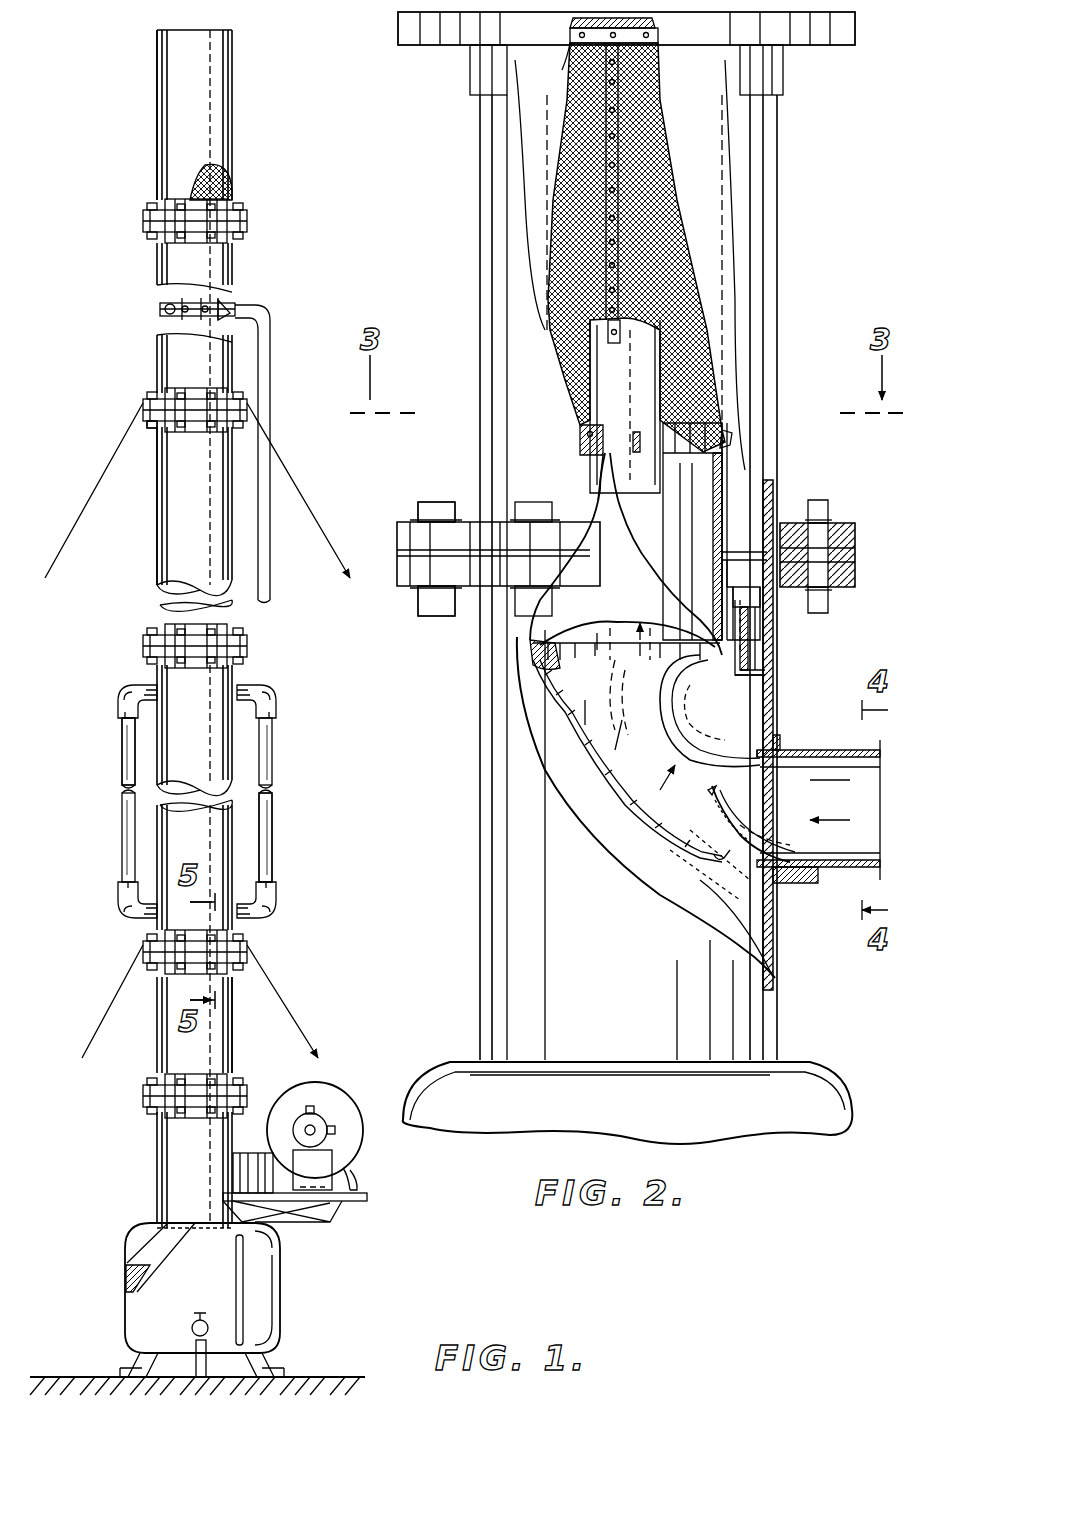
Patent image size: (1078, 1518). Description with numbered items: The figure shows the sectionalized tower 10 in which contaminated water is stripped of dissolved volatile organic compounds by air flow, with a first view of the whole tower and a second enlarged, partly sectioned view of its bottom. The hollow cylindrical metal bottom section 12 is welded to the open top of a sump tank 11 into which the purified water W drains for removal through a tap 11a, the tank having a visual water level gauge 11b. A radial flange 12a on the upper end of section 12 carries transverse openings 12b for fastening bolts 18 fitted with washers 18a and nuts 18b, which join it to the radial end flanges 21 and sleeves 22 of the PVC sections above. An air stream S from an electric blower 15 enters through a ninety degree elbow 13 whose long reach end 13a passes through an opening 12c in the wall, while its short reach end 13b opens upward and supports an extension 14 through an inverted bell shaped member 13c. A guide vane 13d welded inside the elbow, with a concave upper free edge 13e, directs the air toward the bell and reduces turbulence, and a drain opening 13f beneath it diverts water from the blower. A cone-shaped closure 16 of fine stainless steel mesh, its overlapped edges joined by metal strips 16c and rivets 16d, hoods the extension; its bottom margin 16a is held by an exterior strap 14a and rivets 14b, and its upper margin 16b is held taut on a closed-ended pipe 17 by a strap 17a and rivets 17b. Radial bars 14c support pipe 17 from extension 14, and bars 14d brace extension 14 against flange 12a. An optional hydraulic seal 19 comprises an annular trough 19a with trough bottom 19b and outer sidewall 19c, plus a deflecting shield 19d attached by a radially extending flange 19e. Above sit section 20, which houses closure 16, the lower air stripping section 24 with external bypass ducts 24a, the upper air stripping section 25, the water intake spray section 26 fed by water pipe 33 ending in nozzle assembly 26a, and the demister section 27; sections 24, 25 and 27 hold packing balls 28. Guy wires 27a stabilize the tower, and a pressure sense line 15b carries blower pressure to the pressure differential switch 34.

In FIG. 1, the sectionalized tower 10 is at (305, 667).
In FIG. 1, the sump tank 11 is at (135, 1295).
In FIG. 2, the sump tank 11 is at (805, 1085).
In FIG. 1, the tap 11a is at (192, 1328).
In FIG. 1, the visual water level gauge 11b is at (243, 1300).
In FIG. 1, the bottom section 12 is at (155, 1143).
In FIG. 2, the bottom section 12 is at (476, 712).
In FIG. 2, the radial flange 12a is at (830, 568).
In FIG. 2, the transverse openings 12b is at (830, 610).
In FIG. 2, the opening 12c is at (790, 885).
In FIG. 2, the elbow 13 is at (650, 840).
In FIG. 2, the long reach end 13a is at (820, 725).
In FIG. 2, the short reach end 13b is at (565, 715).
In FIG. 2, the inverted bell shaped member 13c is at (522, 663).
In FIG. 2, the guide vane 13d is at (748, 828).
In FIG. 2, the concave upper free edge 13e is at (710, 790).
In FIG. 2, the drain opening 13f is at (718, 860).
In FIG. 2, the extension 14 is at (723, 470).
In FIG. 2, the exterior strap 14a is at (735, 435).
In FIG. 2, the rivets 14b is at (590, 442).
In FIG. 2, the bars 14c is at (610, 478).
In FIG. 2, the bars 14d is at (735, 556).
In FIG. 1, the electric blower 15 is at (335, 1100).
In FIG. 1, the pressure sense line 15b is at (352, 1180).
In FIG. 2, the cone-shaped closure 16 is at (670, 180).
In FIG. 2, the bottom margin 16a is at (732, 425).
In FIG. 2, the upper margin 16b is at (655, 48).
In FIG. 2, the metal strips 16c is at (612, 345).
In FIG. 2, the rivets 16d is at (615, 85).
In FIG. 2, the closed-ended pipe 17 is at (605, 398).
In FIG. 2, the exterior strap 17a is at (570, 30).
In FIG. 2, the rivets 17b is at (572, 50).
In FIG. 1, the fastening bolts 18 is at (236, 215).
In FIG. 2, the fastening bolts 18 is at (440, 502).
In FIG. 2, the washers 18a is at (415, 520).
In FIG. 1, the nuts 18b is at (148, 428).
In FIG. 2, the nuts 18b is at (420, 605).
In FIG. 2, the hydraulic seal 19 is at (745, 590).
In FIG. 2, the annular trough 19a is at (755, 670).
In FIG. 2, the trough bottom 19b is at (710, 711).
In FIG. 2, the outer sidewall 19c is at (762, 660).
In FIG. 2, the deflecting shield 19d is at (731, 596).
In FIG. 2, the radially extending flange 19e is at (398, 560).
In FIG. 1, the section 20 is at (235, 1057).
In FIG. 2, the section 20 is at (782, 270).
In FIG. 2, the radial end flanges 21 is at (835, 525).
In FIG. 2, the sleeves 22 is at (783, 85).
In FIG. 1, the lower air stripping section 24 is at (160, 745).
In FIG. 1, the bypass ducts 24a is at (122, 770).
In FIG. 1, the upper air stripping section 25 is at (160, 516).
In FIG. 1, the water intake spray section 26 is at (160, 322).
In FIG. 1, the nozzle assembly 26a is at (232, 300).
In FIG. 1, the demister section 27 is at (165, 167).
In FIG. 1, the guy wires 27a is at (298, 500).
In FIG. 1, the packing balls 28 is at (232, 185).
In FIG. 1, the water pipe 33 is at (270, 345).
In FIG. 1, the pressure differential switch 34 is at (368, 1198).
In FIG. 2, the air stream S is at (817, 807).
In FIG. 1, the purified water W is at (140, 1265).